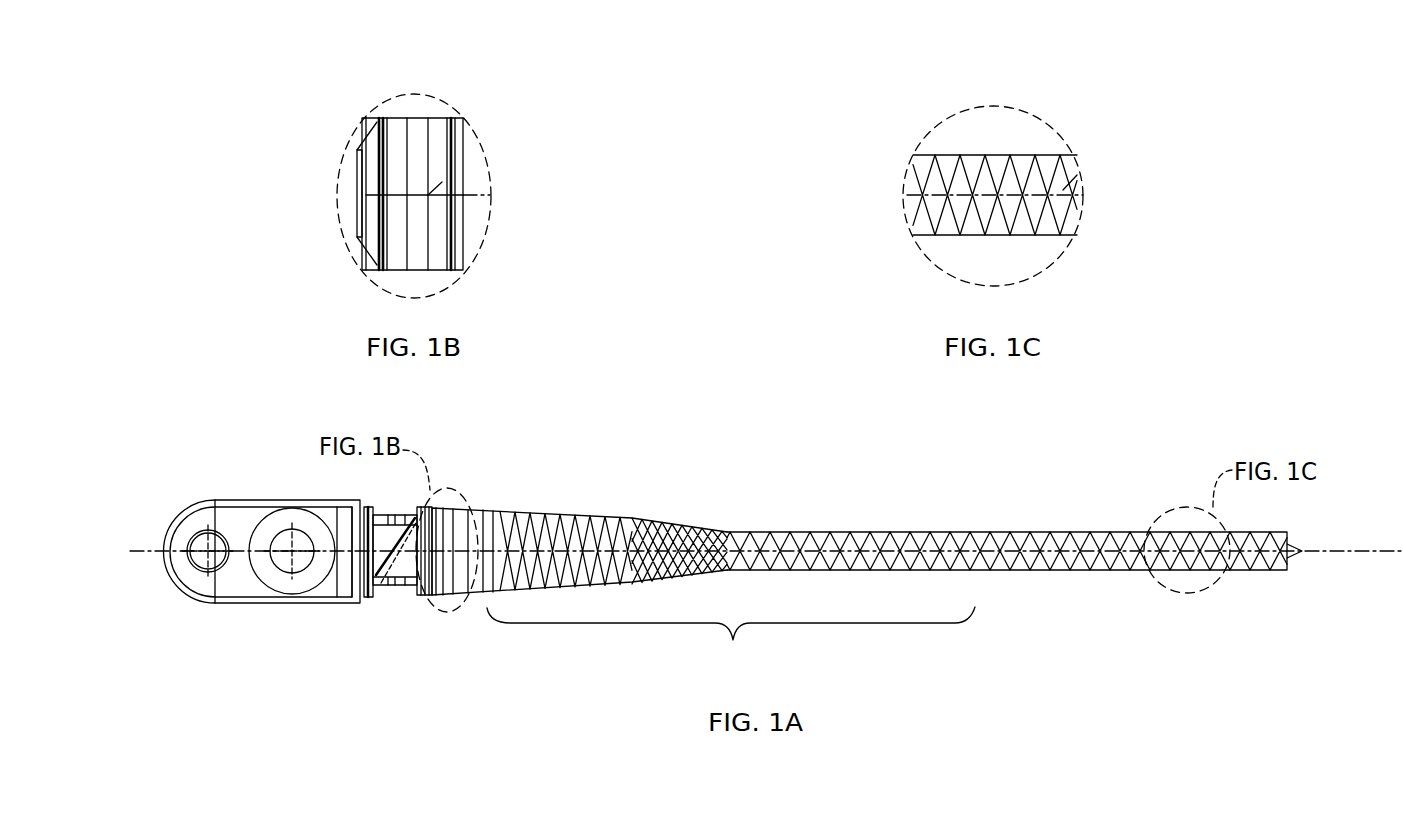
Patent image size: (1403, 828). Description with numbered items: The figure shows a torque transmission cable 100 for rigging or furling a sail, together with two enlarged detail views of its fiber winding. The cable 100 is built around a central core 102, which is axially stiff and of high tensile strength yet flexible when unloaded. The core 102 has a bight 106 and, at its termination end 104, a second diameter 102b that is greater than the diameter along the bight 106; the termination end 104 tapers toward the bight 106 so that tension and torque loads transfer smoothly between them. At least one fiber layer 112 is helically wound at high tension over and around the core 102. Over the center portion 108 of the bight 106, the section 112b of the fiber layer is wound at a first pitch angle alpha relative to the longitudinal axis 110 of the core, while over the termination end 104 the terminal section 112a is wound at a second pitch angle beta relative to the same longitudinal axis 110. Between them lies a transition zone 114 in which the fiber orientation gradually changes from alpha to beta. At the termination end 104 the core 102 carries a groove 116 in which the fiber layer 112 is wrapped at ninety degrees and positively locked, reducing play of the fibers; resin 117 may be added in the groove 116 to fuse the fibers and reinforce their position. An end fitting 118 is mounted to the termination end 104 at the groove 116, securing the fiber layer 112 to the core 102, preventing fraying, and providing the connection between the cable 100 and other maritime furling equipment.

In FIG. 1A, the cable 100 is at (1257, 97).
In FIG. 1A, the central core 102 is at (893, 522).
In FIG. 1A, the second diameter 102b is at (528, 497).
In FIG. 1A, the termination end 104 is at (433, 590).
In FIG. 1A, the bight 106 is at (933, 530).
In FIG. 1A, the center portion 108 is at (1260, 571).
In FIG. 1A, the longitudinal axis 110 is at (1340, 550).
In FIG. 1B, the longitudinal axis 110 is at (449, 195).
In FIG. 1C, the longitudinal axis 110 is at (1055, 211).
In FIG. 1A, the fiber layer 112 is at (807, 540).
In FIG. 1A, the terminal section of fiber layer 112a is at (445, 520).
In FIG. 1B, the terminal section of fiber layer 112a is at (403, 258).
In FIG. 1A, the fiber layer section over bight 112b is at (1168, 562).
In FIG. 1C, the fiber layer section over bight 112b is at (1040, 222).
In FIG. 1A, the transition zone 114 is at (731, 638).
In FIG. 1A, the groove 116 is at (395, 583).
In FIG. 1A, the resin 117 is at (387, 530).
In FIG. 1A, the end fitting 118 is at (272, 602).